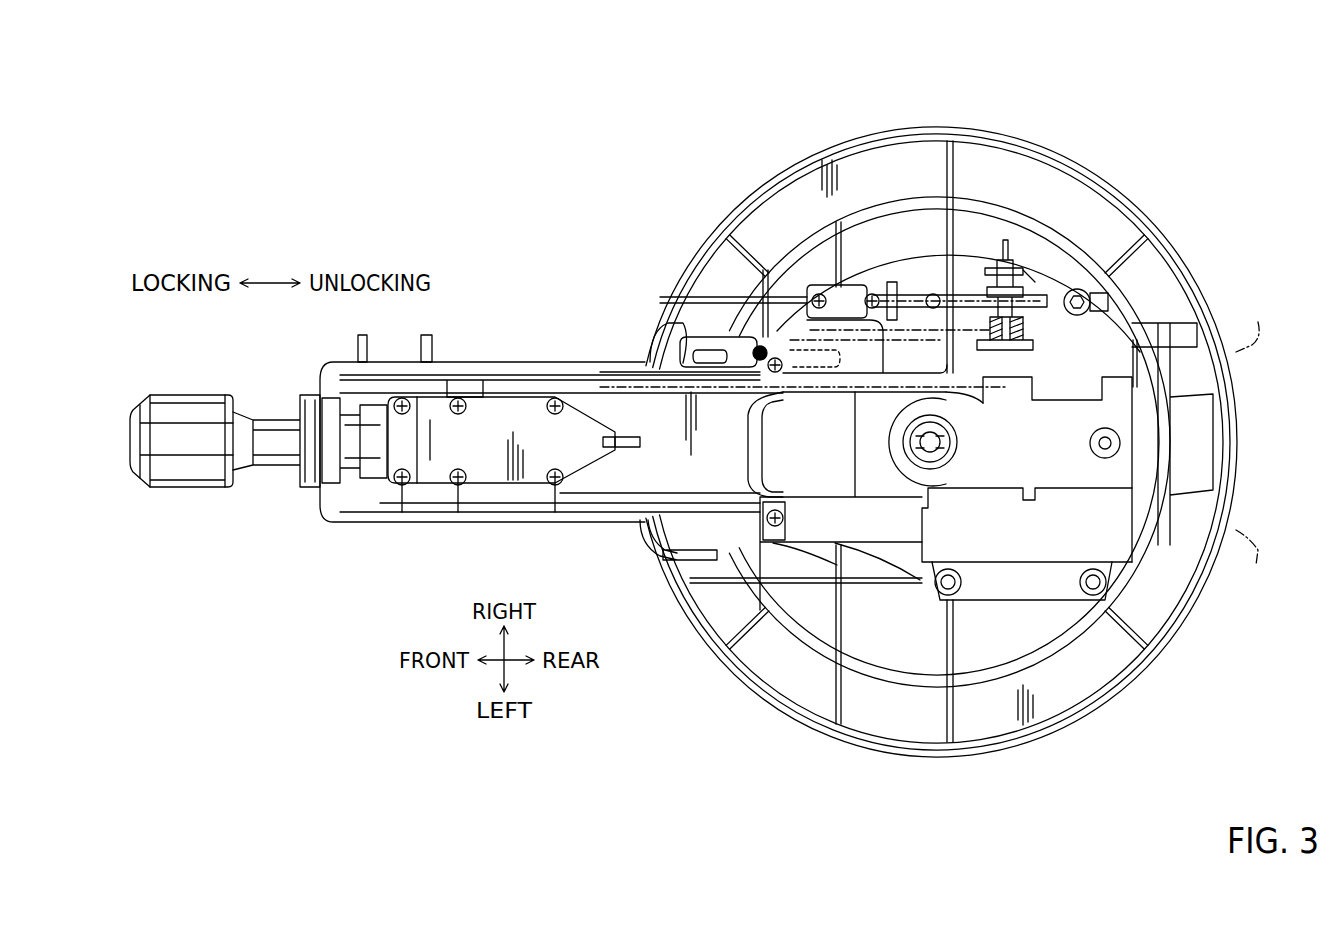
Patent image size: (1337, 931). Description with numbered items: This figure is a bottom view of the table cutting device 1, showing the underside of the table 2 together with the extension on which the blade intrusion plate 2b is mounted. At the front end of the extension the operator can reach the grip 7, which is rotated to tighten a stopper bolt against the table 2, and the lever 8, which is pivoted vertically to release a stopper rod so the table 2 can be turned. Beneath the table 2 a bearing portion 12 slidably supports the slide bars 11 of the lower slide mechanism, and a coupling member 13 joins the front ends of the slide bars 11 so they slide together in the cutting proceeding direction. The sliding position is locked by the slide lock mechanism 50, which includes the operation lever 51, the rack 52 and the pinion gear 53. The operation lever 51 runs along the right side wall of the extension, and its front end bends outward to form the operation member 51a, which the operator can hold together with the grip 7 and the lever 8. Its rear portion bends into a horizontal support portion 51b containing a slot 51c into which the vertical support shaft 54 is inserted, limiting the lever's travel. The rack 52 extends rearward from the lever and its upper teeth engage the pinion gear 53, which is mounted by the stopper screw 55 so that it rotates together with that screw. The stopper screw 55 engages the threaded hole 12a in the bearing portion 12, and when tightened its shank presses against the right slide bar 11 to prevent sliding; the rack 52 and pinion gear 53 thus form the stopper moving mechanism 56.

The table cutting device 1 is at (1068, 148).
The table 2 is at (818, 147).
The blade intrusion plate 2b is at (430, 522).
The grip 7 is at (185, 405).
The lever 8 is at (272, 407).
The slide bars 11 is at (972, 312).
The bearing portion 12 is at (985, 540).
The threaded hole 12a is at (1037, 289).
The coupling member 13 is at (757, 512).
The slide lock mechanism 50 is at (1040, 298).
The operation lever 51 is at (615, 378).
The operation member 51a is at (428, 340).
The support portion 51b is at (730, 347).
The slot 51c is at (690, 350).
The rack 52 is at (1007, 250).
The pinion gear 53 is at (1090, 310).
The support shaft 54 is at (785, 335).
The stopper screw 55 is at (1010, 358).
The stopper moving mechanism 56 is at (917, 280).